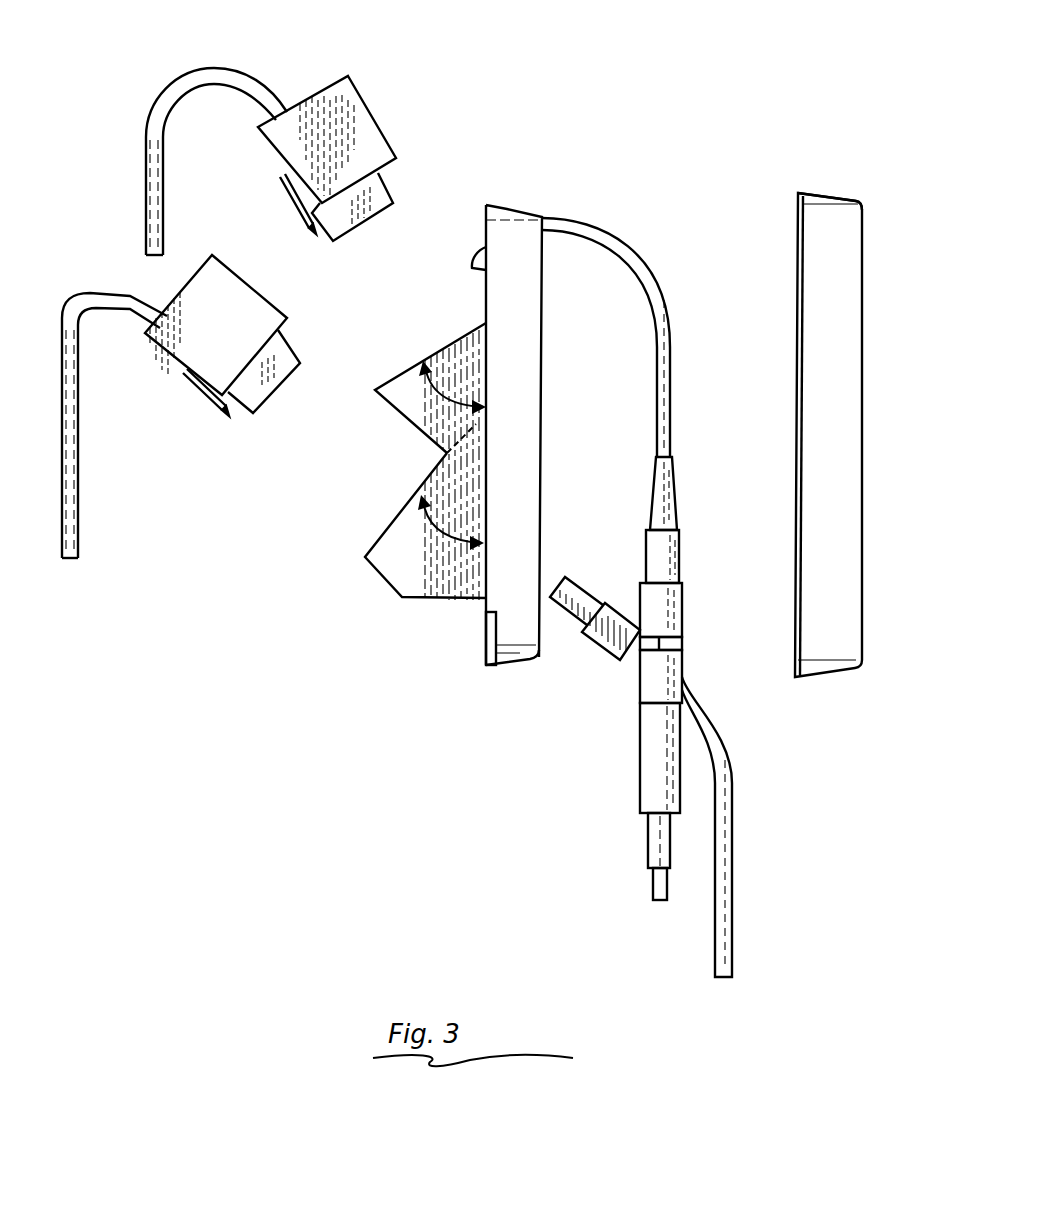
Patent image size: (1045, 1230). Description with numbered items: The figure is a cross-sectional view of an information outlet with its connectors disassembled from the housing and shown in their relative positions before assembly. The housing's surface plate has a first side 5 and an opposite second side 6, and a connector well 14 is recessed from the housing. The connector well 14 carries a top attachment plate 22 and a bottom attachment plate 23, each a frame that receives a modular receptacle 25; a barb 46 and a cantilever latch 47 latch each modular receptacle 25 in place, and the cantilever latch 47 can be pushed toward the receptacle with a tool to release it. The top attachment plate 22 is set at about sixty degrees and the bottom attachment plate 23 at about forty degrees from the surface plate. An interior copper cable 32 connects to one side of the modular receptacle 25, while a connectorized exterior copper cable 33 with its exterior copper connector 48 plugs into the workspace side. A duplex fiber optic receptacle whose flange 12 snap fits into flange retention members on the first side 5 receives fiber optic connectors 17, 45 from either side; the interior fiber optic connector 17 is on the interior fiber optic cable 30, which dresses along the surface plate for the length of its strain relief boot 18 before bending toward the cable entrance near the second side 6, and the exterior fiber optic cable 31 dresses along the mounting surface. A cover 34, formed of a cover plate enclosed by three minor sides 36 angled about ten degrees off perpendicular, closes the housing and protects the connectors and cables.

The first side 5 is at (512, 662).
The second side 6 is at (508, 213).
The flange 12 is at (672, 643).
The connector well 14 is at (427, 557).
The interior fiber optic connector 17 is at (655, 560).
The strain relief boot 18 is at (668, 502).
The top attachment plate 22 is at (421, 362).
The bottom attachment plate 23 is at (408, 503).
The modular receptacle 25 is at (367, 137).
The interior fiber optic cable 30 is at (630, 252).
The exterior fiber optic cable 31 is at (660, 882).
The interior copper cable 32 is at (196, 76).
The exterior copper cable 33 is at (723, 867).
The cover 34 is at (872, 176).
The minor side 36 is at (822, 245).
The fiber optic connector 45 is at (657, 735).
The barb 46 is at (381, 178).
The cantilever latch 47 is at (305, 222).
The exterior copper connector 48 is at (603, 633).